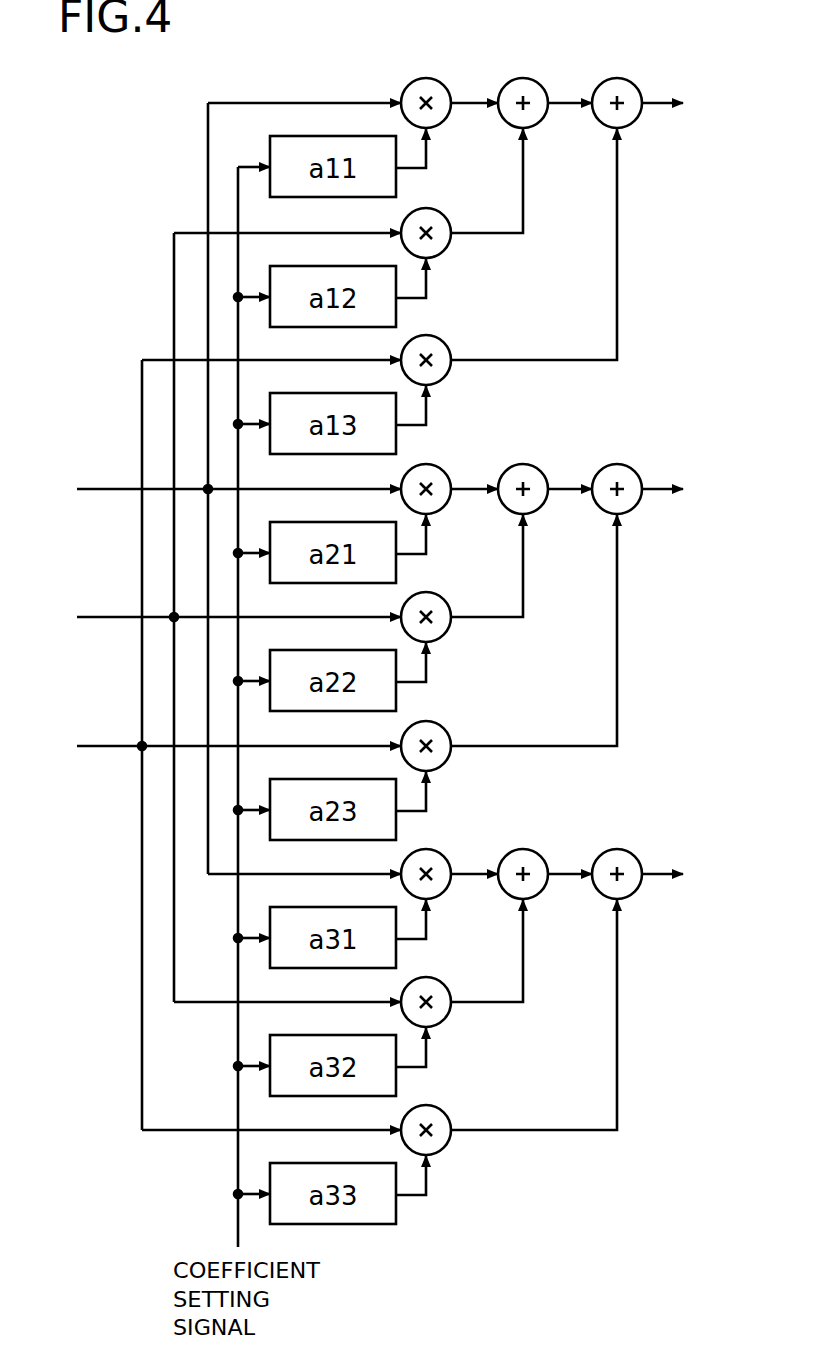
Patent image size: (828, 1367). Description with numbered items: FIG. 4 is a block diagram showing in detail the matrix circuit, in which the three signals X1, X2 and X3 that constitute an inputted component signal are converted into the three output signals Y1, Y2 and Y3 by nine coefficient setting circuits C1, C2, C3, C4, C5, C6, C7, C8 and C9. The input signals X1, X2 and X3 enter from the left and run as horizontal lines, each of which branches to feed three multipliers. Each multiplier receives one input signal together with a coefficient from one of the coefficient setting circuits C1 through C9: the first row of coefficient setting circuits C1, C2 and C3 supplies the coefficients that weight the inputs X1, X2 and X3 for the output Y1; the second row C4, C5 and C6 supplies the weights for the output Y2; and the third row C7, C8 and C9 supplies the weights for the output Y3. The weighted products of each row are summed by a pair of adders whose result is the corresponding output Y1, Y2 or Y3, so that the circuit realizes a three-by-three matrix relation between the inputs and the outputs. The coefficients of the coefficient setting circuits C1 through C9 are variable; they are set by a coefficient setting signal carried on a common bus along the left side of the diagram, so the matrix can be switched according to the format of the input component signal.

The coefficient setting circuit C1 is at (396, 173).
The coefficient setting circuit C2 is at (396, 303).
The coefficient setting circuit C3 is at (396, 430).
The coefficient setting circuit C4 is at (396, 559).
The coefficient setting circuit C5 is at (396, 687).
The coefficient setting circuit C6 is at (396, 816).
The coefficient setting circuit C7 is at (396, 944).
The coefficient setting circuit C8 is at (396, 1072).
The coefficient setting circuit C9 is at (396, 1200).
The input signal X1 is at (218, 488).
The input signal X2 is at (218, 617).
The input signal X3 is at (218, 745).
The output signal Y1 is at (682, 103).
The output signal Y2 is at (682, 489).
The output signal Y3 is at (682, 874).